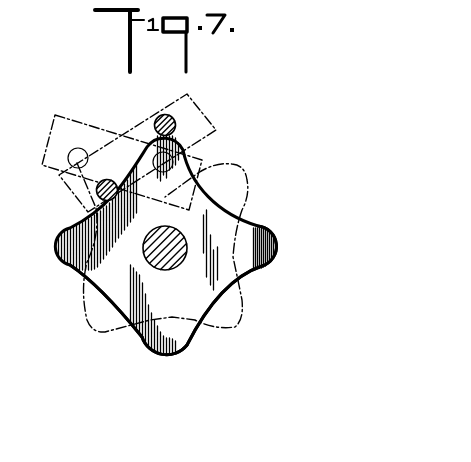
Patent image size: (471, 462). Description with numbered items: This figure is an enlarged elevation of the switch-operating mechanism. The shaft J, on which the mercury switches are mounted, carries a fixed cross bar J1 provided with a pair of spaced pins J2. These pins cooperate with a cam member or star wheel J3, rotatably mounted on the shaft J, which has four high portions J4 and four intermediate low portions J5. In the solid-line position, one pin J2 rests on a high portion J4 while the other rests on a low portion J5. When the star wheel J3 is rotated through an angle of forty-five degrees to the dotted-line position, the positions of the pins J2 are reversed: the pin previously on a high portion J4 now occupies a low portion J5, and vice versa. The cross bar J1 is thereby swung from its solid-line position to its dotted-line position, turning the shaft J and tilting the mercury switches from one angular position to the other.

The shaft J is at (165, 245).
The cross bar J1 is at (142, 122).
The pins J2 is at (176, 122).
The star wheel J3 is at (254, 255).
The high portions J4 is at (266, 238).
The low portions J5 is at (207, 312).